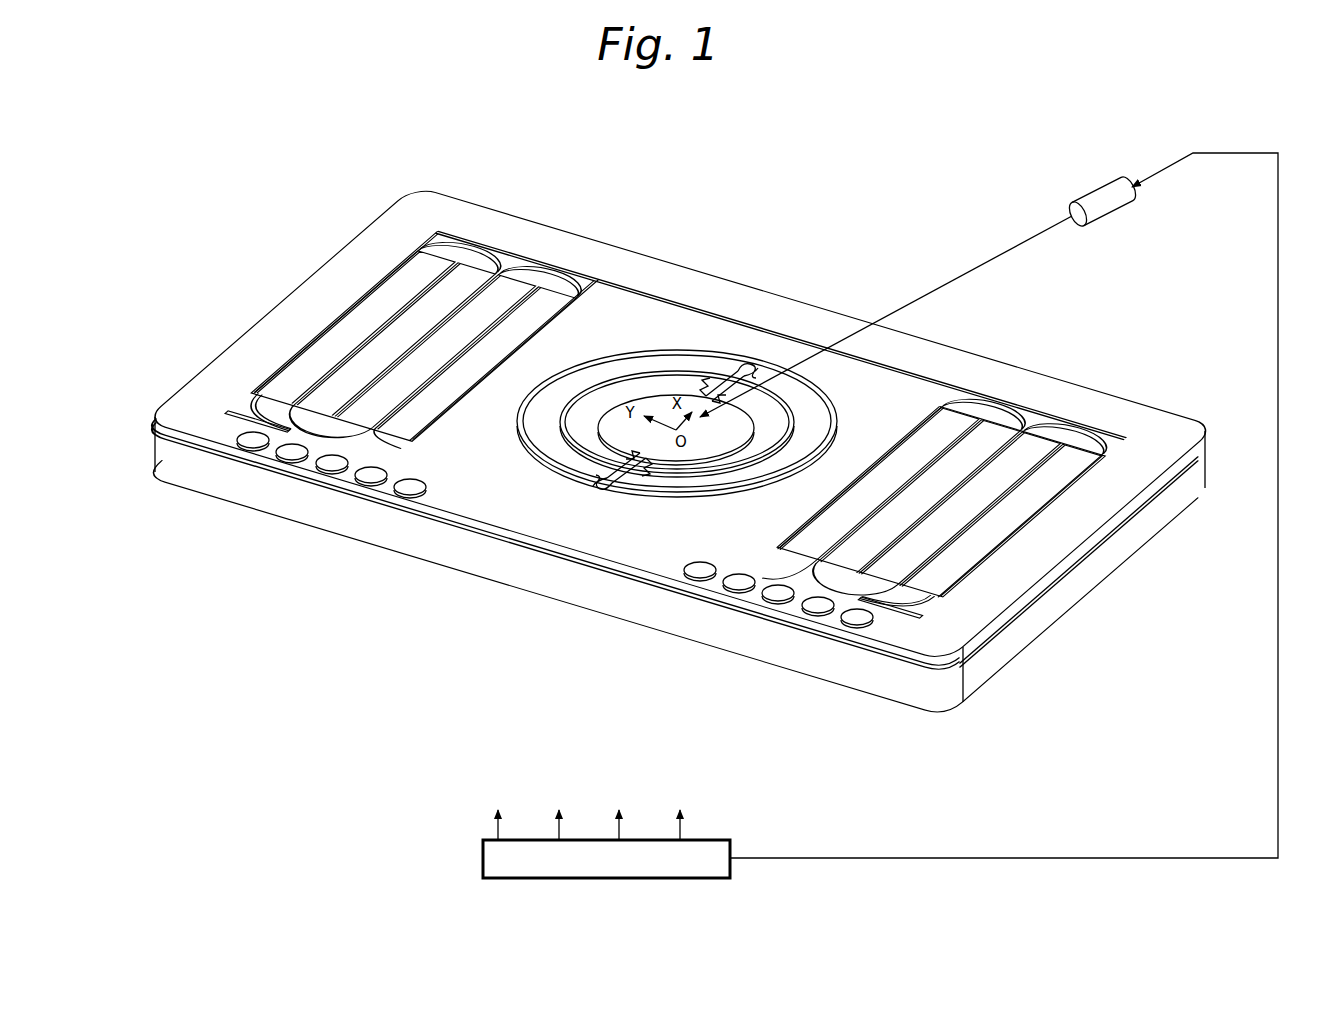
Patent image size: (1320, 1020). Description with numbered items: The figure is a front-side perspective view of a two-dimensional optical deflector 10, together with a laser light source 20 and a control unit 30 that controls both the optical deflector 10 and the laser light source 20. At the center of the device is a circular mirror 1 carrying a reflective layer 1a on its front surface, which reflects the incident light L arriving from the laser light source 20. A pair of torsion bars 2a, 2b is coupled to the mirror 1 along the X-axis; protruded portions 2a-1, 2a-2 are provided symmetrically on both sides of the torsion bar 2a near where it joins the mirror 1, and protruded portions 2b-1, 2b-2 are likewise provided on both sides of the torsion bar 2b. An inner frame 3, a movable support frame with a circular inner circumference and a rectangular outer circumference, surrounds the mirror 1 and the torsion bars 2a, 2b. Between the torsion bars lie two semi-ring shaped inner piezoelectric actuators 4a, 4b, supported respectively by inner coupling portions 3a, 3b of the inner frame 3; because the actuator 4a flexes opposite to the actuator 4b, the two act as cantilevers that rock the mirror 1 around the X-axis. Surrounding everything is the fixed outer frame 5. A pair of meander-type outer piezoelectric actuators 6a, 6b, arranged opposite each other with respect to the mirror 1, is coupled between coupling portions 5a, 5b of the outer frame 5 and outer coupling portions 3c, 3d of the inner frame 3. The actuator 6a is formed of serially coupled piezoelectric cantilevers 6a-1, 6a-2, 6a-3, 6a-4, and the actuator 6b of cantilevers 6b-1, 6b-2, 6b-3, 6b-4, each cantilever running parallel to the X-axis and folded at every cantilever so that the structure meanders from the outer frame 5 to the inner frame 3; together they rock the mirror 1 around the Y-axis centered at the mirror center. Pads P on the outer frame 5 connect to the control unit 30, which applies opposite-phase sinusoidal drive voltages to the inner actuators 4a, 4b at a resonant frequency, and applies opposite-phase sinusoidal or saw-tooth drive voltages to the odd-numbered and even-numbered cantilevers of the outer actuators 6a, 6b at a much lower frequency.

The two-dimensional optical deflector 10 is at (777, 184).
The circular mirror 1 is at (770, 398).
The reflective layer 1a is at (760, 412).
The torsion bar 2a is at (708, 378).
The protruded portion 2a-1 is at (693, 385).
The protruded portion 2a-2 is at (740, 372).
The torsion bar 2b is at (640, 470).
The protruded portion 2b-1 is at (607, 483).
The protruded portion 2b-2 is at (660, 490).
The inner frame 3 is at (630, 318).
The inner coupling portion 3a is at (520, 455).
The inner coupling portion 3b is at (850, 402).
The outer coupling portion 3c is at (403, 450).
The outer coupling portion 3d is at (767, 557).
The inner piezoelectric actuator 4a is at (553, 440).
The inner piezoelectric actuator 4b is at (730, 482).
The outer frame 5 is at (1058, 540).
The coupling portion 5a is at (248, 410).
The coupling portion 5b is at (910, 615).
The meander-type outer piezoelectric actuator 6a is at (648, 196).
The piezoelectric cantilever 6a-1 is at (432, 262).
The piezoelectric cantilever 6a-2 is at (465, 280).
The piezoelectric cantilever 6a-3 is at (508, 290).
The piezoelectric cantilever 6a-4 is at (545, 298).
The meander-type outer piezoelectric actuator 6b is at (975, 287).
The piezoelectric cantilever 6b-1 is at (1077, 453).
The piezoelectric cantilever 6b-2 is at (1037, 443).
The piezoelectric cantilever 6b-3 is at (993, 432).
The piezoelectric cantilever 6b-4 is at (957, 420).
The pads P is at (253, 443).
The incident light L is at (1047, 230).
The laser light source 20 is at (1112, 208).
The control unit 30 is at (740, 850).